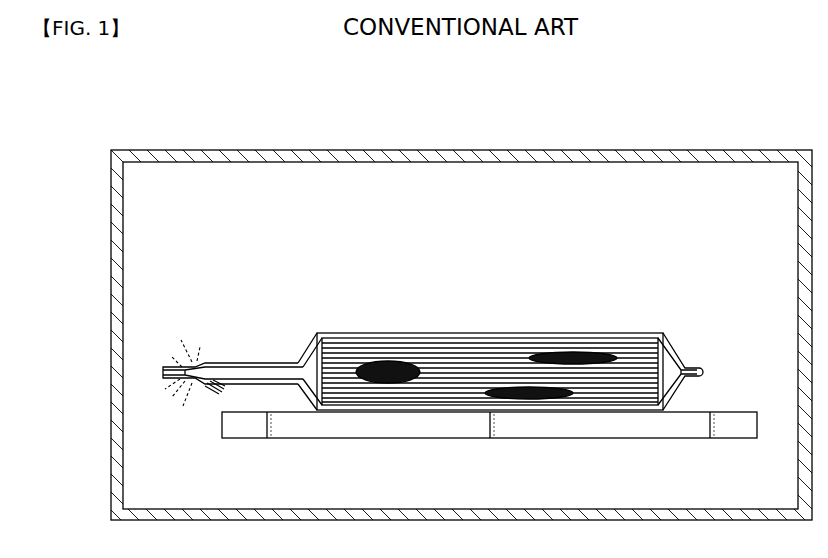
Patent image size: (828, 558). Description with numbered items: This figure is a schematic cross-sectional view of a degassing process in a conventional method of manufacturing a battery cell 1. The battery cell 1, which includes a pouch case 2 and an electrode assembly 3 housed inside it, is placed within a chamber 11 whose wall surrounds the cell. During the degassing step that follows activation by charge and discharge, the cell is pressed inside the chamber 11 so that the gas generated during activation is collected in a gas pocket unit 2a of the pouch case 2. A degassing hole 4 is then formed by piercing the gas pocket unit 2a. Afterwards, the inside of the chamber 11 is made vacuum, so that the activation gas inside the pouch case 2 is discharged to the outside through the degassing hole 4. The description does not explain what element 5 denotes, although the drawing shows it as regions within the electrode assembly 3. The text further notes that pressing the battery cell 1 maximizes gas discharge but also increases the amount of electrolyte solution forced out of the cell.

The battery cell 1 is at (710, 372).
The pouch case 2 is at (545, 333).
The gas pocket unit 2a is at (214, 392).
The electrode assembly 3 is at (464, 352).
The degassing hole 4 is at (202, 362).
The air bubbles 5 is at (391, 361).
The chamber 11 is at (731, 150).